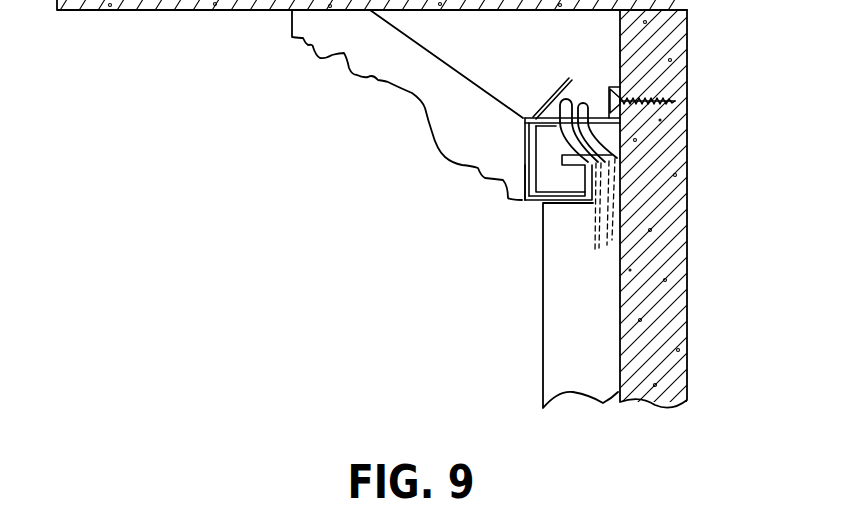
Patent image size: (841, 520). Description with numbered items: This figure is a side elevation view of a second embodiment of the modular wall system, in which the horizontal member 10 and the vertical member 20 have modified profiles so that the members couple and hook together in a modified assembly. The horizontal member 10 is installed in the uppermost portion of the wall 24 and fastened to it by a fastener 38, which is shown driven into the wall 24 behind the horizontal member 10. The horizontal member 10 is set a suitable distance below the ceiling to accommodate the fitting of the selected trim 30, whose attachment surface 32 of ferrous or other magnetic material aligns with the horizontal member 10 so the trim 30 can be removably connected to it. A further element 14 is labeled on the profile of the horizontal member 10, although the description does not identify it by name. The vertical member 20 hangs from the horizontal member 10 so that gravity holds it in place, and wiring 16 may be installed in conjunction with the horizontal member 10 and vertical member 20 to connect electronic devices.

The horizontal member 10 is at (601, 102).
The mounting clip 14 is at (547, 107).
The wiring 16 is at (585, 107).
The vertical member 20 is at (563, 333).
The wall 24 is at (655, 152).
The trim 30 is at (415, 73).
The attachment surface 32 is at (528, 167).
The fastener 38 is at (645, 96).